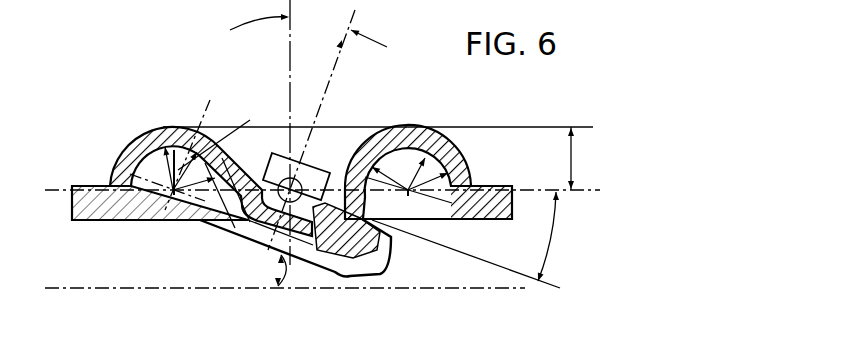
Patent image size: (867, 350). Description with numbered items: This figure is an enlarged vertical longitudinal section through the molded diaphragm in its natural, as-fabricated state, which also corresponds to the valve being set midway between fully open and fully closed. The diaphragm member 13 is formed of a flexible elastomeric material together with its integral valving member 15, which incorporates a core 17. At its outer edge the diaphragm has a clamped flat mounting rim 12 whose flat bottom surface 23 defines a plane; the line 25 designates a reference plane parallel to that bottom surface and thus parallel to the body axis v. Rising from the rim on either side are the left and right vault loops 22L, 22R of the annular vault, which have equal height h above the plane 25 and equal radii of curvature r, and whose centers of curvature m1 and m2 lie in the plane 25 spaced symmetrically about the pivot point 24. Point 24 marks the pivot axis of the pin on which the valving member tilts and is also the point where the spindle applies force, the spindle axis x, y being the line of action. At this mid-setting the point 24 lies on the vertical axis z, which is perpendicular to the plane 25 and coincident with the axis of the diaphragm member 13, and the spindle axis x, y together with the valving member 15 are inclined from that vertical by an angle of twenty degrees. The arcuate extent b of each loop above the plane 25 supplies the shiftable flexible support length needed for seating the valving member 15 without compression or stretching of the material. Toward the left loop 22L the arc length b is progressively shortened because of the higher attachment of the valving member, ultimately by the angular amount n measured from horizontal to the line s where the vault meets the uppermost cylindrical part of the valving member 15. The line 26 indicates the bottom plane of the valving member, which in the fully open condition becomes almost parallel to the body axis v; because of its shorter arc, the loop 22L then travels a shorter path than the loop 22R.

The mounting rim 12 is at (503, 186).
The diaphragm member 13 is at (300, 126).
The valving member 15 is at (365, 268).
The core 17 is at (345, 274).
The left vault loop 22L is at (170, 128).
The right vault loop 22R is at (398, 128).
The flat bottom surface 23 is at (88, 221).
The pivot axis point 24 is at (303, 166).
The reference plane 25 is at (533, 190).
The bottom plane line 26 is at (483, 262).
The arcuate extent b is at (150, 146).
The vault height h is at (580, 158).
The center of curvature m1 is at (180, 193).
The center of curvature m2 is at (408, 195).
The angular amount n is at (218, 143).
The radius of curvature r is at (172, 193).
The line s is at (208, 100).
The body axis v is at (125, 277).
The spindle axis x is at (311, 130).
The spindle axis y is at (369, 46).
The vertical axis z is at (288, 70).